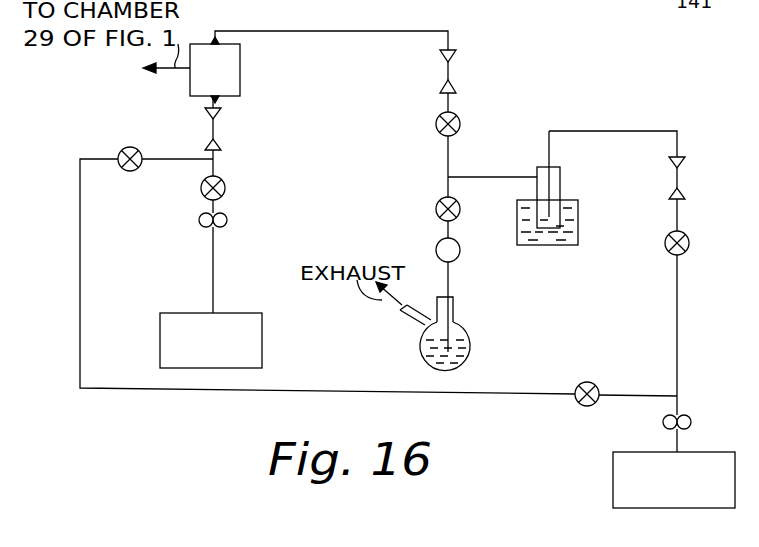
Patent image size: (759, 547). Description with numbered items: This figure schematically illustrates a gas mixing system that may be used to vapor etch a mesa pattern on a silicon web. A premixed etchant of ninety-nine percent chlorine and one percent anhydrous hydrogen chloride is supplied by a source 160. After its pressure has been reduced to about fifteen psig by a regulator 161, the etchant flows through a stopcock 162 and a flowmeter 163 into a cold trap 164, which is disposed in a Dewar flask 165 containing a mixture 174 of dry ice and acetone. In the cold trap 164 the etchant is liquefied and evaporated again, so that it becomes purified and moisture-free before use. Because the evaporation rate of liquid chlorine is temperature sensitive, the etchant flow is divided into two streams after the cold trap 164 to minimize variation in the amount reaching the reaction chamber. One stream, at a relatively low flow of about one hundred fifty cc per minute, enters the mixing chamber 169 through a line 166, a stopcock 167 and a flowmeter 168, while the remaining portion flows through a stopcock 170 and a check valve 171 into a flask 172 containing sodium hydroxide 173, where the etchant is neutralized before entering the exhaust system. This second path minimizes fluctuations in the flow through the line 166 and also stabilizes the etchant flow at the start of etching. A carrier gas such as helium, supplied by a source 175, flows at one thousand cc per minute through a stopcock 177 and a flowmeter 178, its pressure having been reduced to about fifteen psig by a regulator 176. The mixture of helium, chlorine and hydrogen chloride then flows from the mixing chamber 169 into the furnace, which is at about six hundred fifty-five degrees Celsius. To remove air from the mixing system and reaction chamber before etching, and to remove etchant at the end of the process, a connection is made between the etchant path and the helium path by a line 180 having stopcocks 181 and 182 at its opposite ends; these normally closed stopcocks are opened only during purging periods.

The source 160 is at (612, 473).
The regulator 161 is at (692, 421).
The stopcock 162 is at (690, 243).
The flowmeter 163 is at (680, 177).
The cold trap 164 is at (562, 186).
The Dewar flask 165 is at (580, 228).
The line 166 is at (447, 155).
The stopcock 167 is at (460, 124).
The flowmeter 168 is at (450, 69).
The mixing chamber 169 is at (242, 68).
The stopcock 170 is at (435, 209).
The check valve 171 is at (434, 248).
The flask 172 is at (466, 328).
The sodium hydroxide 173 is at (468, 358).
The mixture 174 is at (548, 240).
The source 175 is at (264, 343).
The regulator 176 is at (228, 220).
The stopcock 177 is at (226, 188).
The flowmeter 178 is at (215, 128).
The line 180 is at (80, 357).
The stopcock 181 is at (588, 382).
The stopcock 182 is at (130, 146).